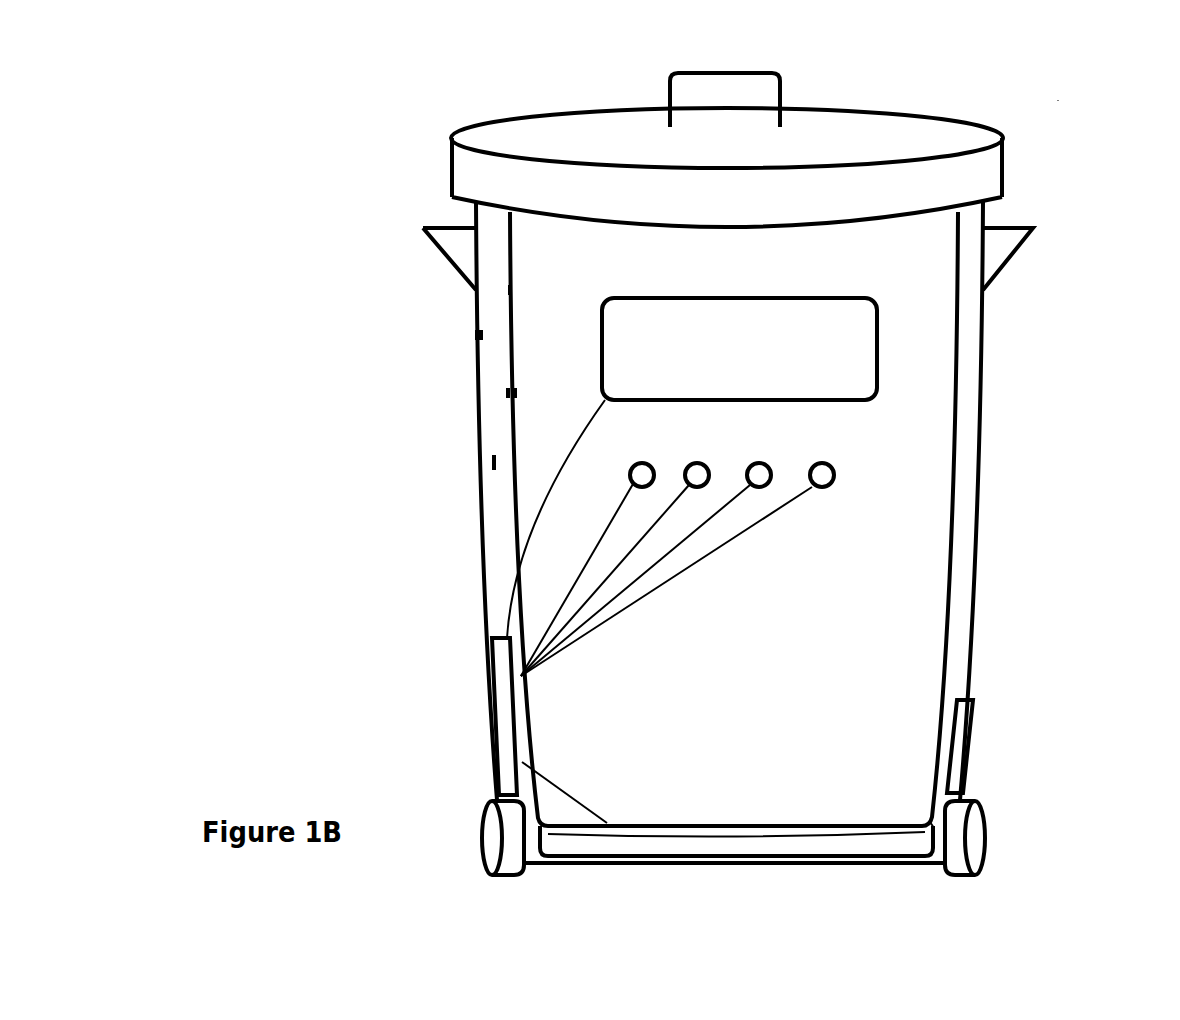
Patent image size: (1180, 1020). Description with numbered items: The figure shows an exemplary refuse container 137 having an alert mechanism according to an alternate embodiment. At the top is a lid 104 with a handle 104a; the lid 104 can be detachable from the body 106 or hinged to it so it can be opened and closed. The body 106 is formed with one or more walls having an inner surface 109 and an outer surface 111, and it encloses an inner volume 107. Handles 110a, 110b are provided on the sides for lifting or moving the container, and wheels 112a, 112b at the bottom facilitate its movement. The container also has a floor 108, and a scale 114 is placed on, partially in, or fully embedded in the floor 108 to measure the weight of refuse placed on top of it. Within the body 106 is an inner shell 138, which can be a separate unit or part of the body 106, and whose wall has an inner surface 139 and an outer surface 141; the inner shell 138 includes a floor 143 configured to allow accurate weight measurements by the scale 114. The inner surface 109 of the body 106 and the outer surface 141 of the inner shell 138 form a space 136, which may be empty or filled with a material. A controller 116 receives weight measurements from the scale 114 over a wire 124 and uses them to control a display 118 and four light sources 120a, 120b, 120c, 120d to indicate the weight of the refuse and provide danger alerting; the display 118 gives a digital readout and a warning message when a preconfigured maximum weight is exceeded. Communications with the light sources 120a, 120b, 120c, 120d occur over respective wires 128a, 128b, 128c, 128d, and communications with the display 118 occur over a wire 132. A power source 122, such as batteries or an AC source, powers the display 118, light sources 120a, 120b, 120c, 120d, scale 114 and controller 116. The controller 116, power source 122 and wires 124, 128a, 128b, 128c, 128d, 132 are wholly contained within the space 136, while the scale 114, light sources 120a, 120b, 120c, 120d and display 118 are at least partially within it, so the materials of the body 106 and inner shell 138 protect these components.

The lid 104 is at (897, 125).
The handle 104a is at (758, 73).
The body 106 is at (985, 400).
The inner volume 107 is at (883, 700).
The floor 108 is at (797, 865).
The inner surface 109 is at (480, 333).
The handle 110a is at (1030, 228).
The handle 110b is at (423, 228).
The outer surface 111 is at (477, 337).
The wheel 112a is at (490, 808).
The wheel 112b is at (983, 800).
The scale 114 is at (847, 825).
The controller 116 is at (491, 713).
The display 118 is at (795, 298).
The light source 120a is at (650, 466).
The light source 120b is at (705, 466).
The light source 120c is at (767, 466).
The light source 120d is at (830, 466).
The power source 122 is at (972, 738).
The wire 124 is at (560, 788).
The wire 128a is at (572, 602).
The wire 128b is at (622, 562).
The wire 128c is at (697, 540).
The wire 128d is at (758, 527).
The wire 132 is at (533, 523).
The space 136 is at (495, 462).
The refuse container 137 is at (1058, 100).
The inner shell 138 is at (510, 290).
The inner surface 139 is at (515, 392).
The outer surface 141 is at (508, 393).
The floor 143 is at (670, 826).